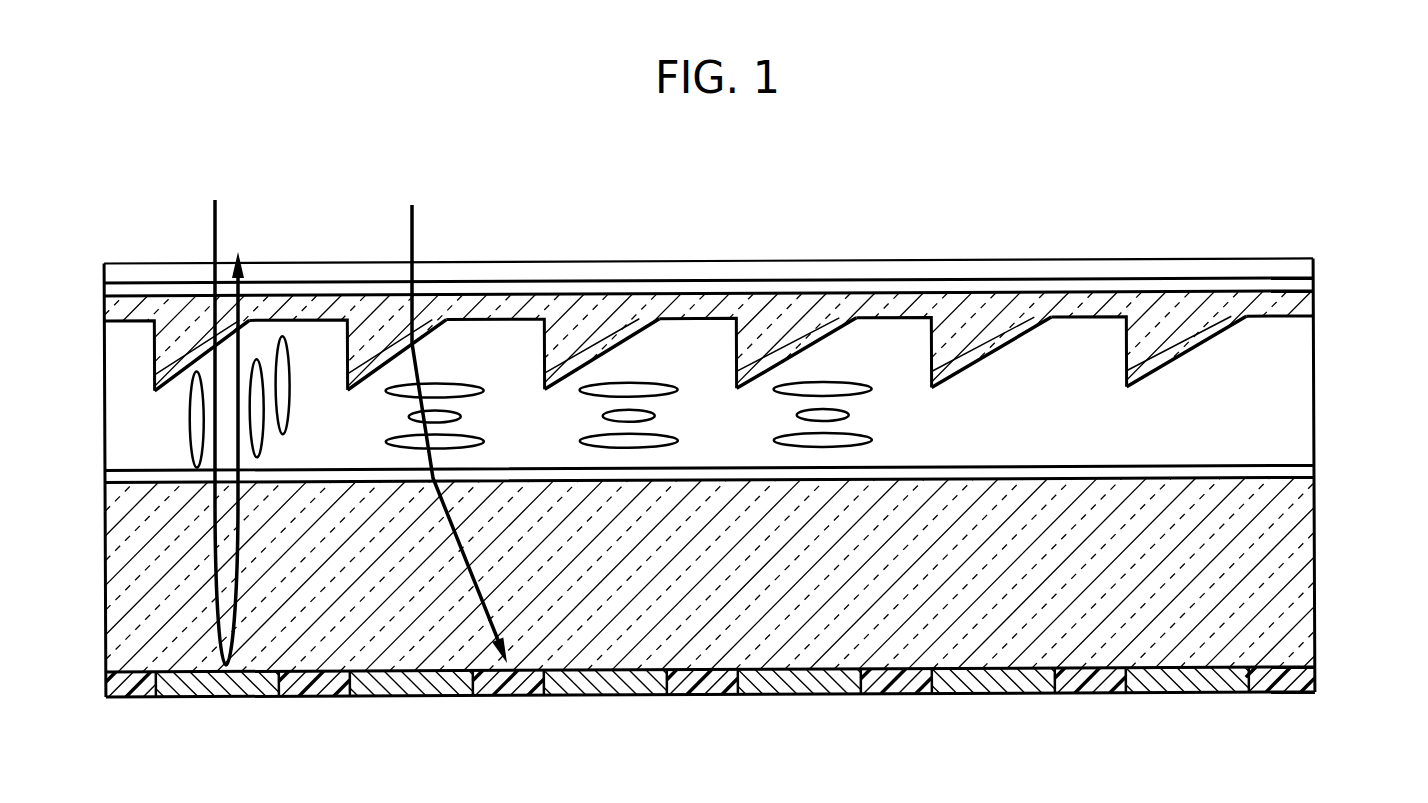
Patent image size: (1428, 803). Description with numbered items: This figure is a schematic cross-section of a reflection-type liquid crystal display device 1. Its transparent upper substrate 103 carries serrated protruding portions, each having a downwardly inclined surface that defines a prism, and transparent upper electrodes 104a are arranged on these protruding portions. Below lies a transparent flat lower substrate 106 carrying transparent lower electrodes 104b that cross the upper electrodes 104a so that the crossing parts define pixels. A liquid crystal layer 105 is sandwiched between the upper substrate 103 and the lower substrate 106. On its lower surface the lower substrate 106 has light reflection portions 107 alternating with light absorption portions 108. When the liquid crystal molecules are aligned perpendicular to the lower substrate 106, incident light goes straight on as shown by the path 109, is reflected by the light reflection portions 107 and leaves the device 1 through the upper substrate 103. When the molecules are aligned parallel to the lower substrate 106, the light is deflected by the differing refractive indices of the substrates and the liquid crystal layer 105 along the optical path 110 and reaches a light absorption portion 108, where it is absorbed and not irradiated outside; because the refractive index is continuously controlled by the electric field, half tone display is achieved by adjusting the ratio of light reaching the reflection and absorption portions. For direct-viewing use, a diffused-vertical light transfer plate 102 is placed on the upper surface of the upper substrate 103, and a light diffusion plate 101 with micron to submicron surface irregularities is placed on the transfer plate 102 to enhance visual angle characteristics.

The reflection-type liquid crystal display device 1 is at (652, 235).
The light diffusion plate 101 is at (1298, 269).
The diffused-vertical light transfer plate 102 is at (1298, 288).
The upper substrate 103 is at (1298, 303).
The upper electrodes 104a is at (1200, 337).
The lower electrodes 104b is at (1298, 471).
The liquid crystal layer 105 is at (1298, 433).
The lower substrate 106 is at (1298, 548).
The light reflection portions 107 is at (212, 686).
The light absorption portions 108 is at (313, 684).
The light going straight 109 is at (217, 215).
The optical path 110 is at (414, 222).